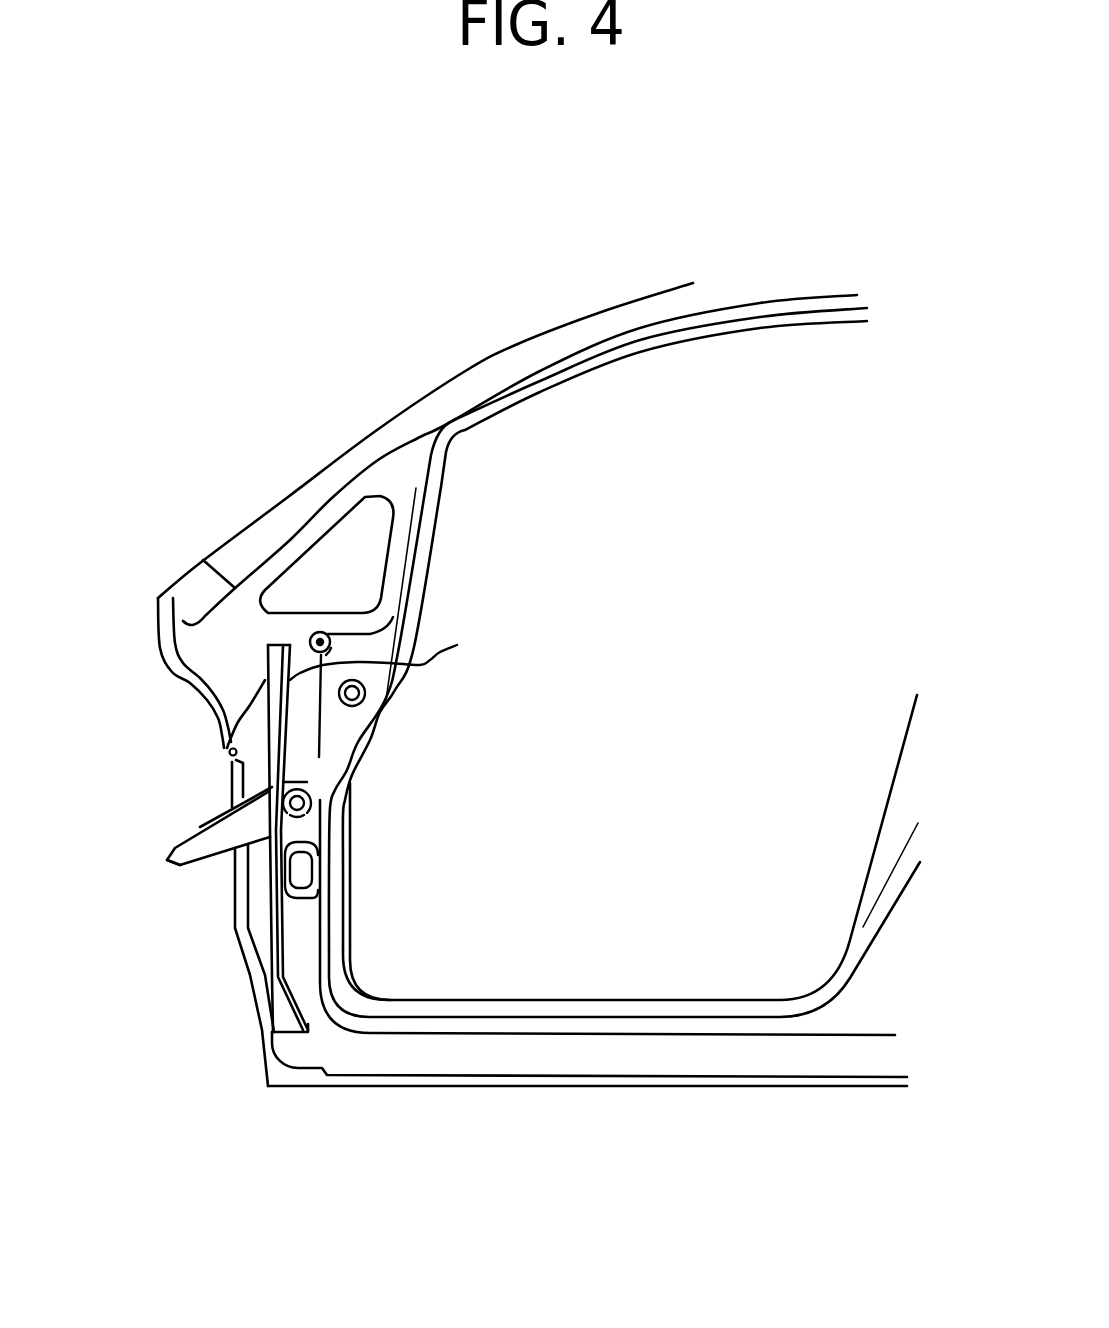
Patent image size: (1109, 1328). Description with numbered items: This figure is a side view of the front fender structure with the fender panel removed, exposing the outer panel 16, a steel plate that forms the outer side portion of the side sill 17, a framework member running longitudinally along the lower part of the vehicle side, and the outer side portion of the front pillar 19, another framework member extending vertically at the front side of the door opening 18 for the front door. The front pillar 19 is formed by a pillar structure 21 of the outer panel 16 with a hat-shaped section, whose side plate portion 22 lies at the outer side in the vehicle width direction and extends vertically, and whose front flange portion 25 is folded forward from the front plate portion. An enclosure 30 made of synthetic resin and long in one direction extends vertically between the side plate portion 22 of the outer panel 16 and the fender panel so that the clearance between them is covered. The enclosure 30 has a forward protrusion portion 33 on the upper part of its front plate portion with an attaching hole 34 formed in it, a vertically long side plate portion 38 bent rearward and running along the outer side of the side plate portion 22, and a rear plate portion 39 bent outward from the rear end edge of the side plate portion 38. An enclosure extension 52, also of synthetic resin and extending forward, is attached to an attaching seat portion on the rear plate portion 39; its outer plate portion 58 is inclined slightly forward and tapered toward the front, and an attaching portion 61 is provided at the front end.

The outer panel 16 is at (388, 725).
The side sill 17 is at (590, 1063).
The door opening 18 is at (345, 900).
The front pillar 19 is at (322, 822).
The pillar structure 21 is at (318, 790).
The side plate portion 22 is at (320, 745).
The front flange portion 25 is at (195, 686).
The enclosure 30 is at (285, 950).
The protrusion portion 33 is at (229, 754).
The attaching hole 34 is at (229, 752).
The side plate portion 38 is at (263, 927).
The rear plate portion 39 is at (392, 648).
The enclosure extension 52 is at (183, 836).
The outer plate portion 58 is at (213, 850).
The attaching portion 61 is at (167, 861).